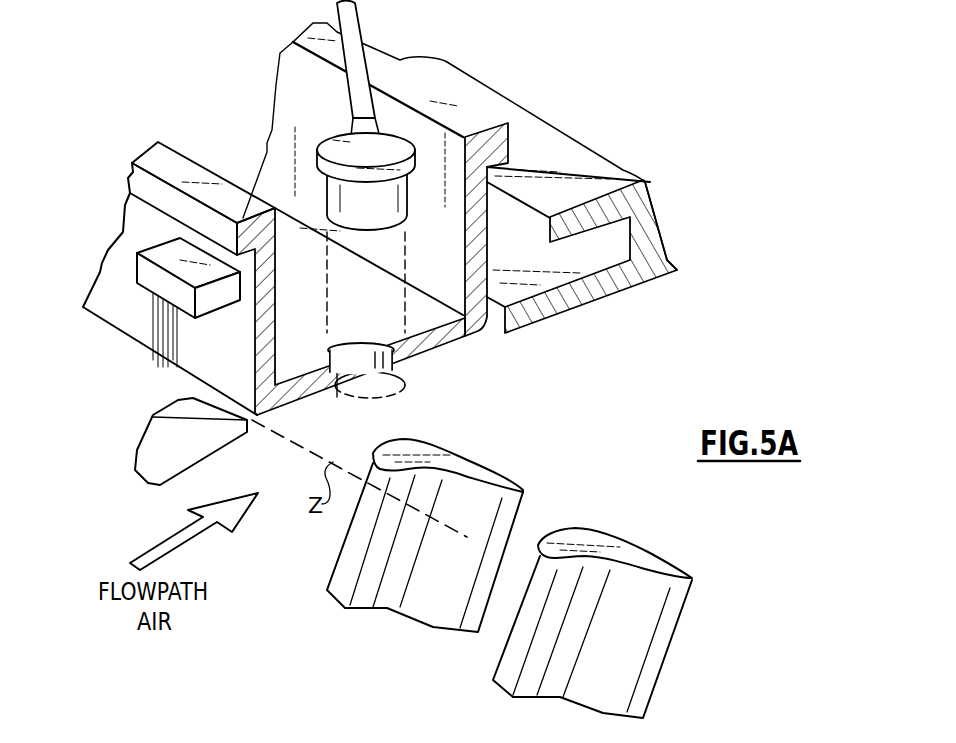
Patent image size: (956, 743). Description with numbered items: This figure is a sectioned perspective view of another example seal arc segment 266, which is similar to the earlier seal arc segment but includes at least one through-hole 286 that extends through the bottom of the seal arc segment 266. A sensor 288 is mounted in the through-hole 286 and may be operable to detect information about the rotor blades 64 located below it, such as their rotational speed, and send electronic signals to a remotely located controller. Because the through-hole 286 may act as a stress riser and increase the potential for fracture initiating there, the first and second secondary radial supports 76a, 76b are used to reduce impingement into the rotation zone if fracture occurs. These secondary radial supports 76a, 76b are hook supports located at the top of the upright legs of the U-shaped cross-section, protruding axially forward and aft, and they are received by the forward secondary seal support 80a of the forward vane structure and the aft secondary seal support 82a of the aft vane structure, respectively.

The rotor blades 64 is at (507, 484).
The first secondary radial support 76a is at (244, 222).
The second secondary radial support 76b is at (497, 134).
The forward secondary seal support 80a is at (221, 304).
The aft secondary seal support 82a is at (570, 244).
The seal arc segment 266 is at (150, 340).
The through-hole 286 is at (344, 357).
The sensor 288 is at (403, 197).